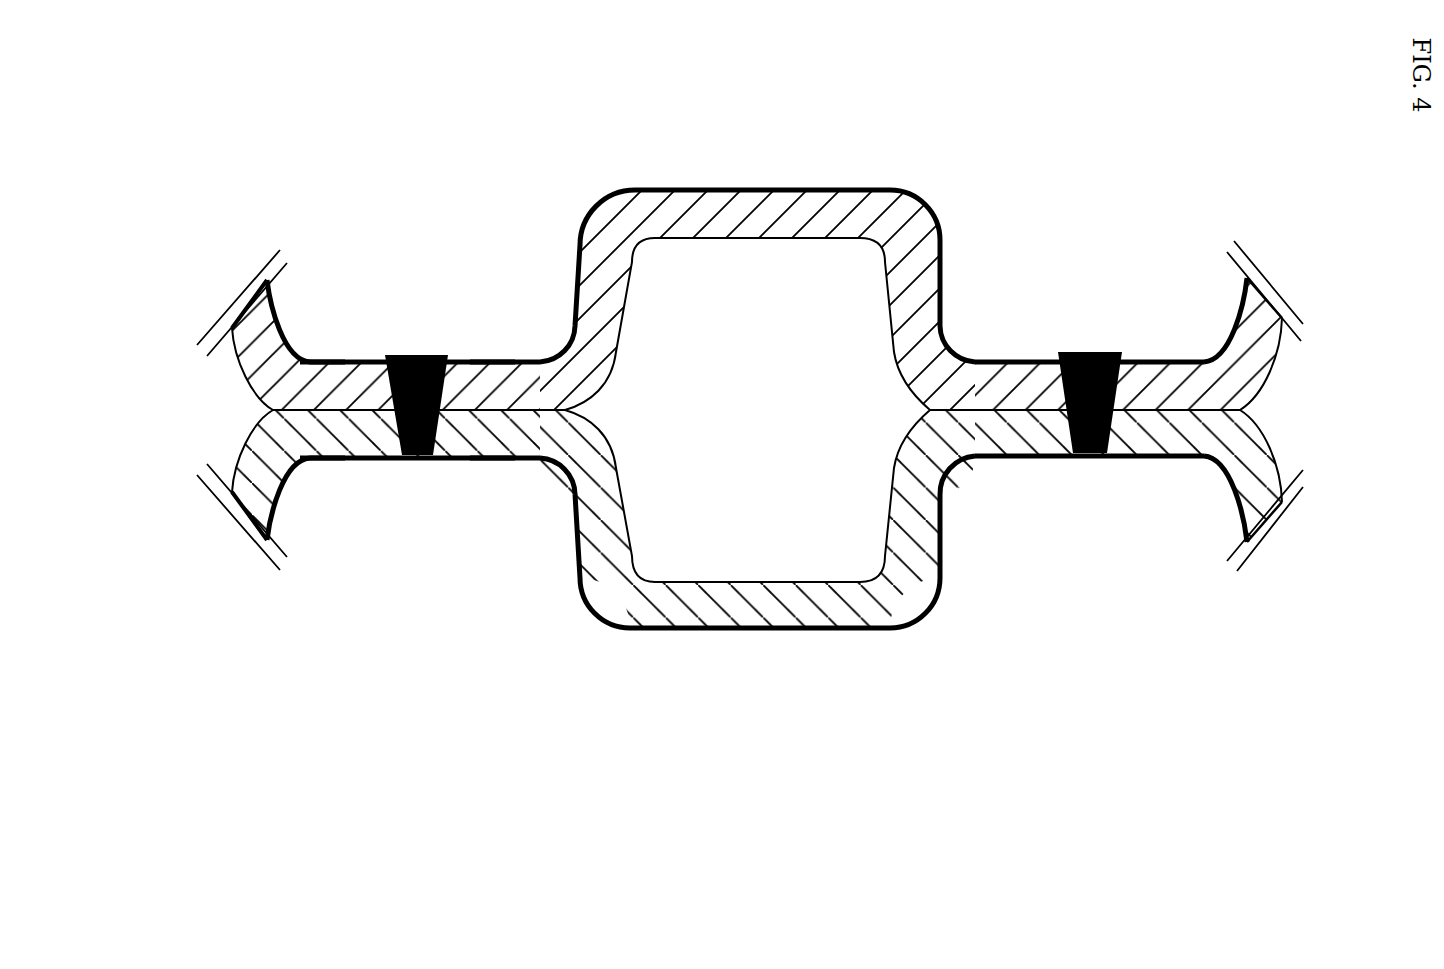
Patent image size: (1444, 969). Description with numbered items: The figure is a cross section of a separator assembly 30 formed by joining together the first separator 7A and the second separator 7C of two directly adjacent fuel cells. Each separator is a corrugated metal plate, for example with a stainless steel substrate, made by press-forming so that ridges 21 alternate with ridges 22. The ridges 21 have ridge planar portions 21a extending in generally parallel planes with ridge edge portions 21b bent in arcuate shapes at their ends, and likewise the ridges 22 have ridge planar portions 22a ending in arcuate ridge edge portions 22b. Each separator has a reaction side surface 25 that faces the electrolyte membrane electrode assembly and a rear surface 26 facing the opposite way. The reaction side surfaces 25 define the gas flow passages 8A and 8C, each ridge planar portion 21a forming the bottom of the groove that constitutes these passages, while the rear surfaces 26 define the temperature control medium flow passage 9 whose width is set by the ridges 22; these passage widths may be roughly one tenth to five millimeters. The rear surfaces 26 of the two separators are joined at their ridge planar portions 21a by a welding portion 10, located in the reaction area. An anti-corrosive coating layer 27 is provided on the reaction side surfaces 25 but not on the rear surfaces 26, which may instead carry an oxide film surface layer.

The separator assembly 30 is at (946, 184).
The ridges 22 is at (732, 105).
The ridge planar portions 22a is at (732, 210).
The ridge edge portions 22b is at (607, 196).
The temperature control medium flow passage 9 is at (743, 390).
The gas flow passage 8A is at (1025, 300).
The gas flow passage 8C is at (965, 520).
The ridges 21 is at (233, 360).
The ridge planar portions 21a is at (362, 362).
The ridge edge portions 21b is at (238, 377).
The anti-corrosive coating layer 27 is at (335, 362).
The reaction side surface 25 is at (493, 362).
The rear surface 26 is at (270, 411).
The welding portion 10 is at (418, 357).
The first separator 7A is at (1278, 269).
The second separator 7C is at (1259, 571).